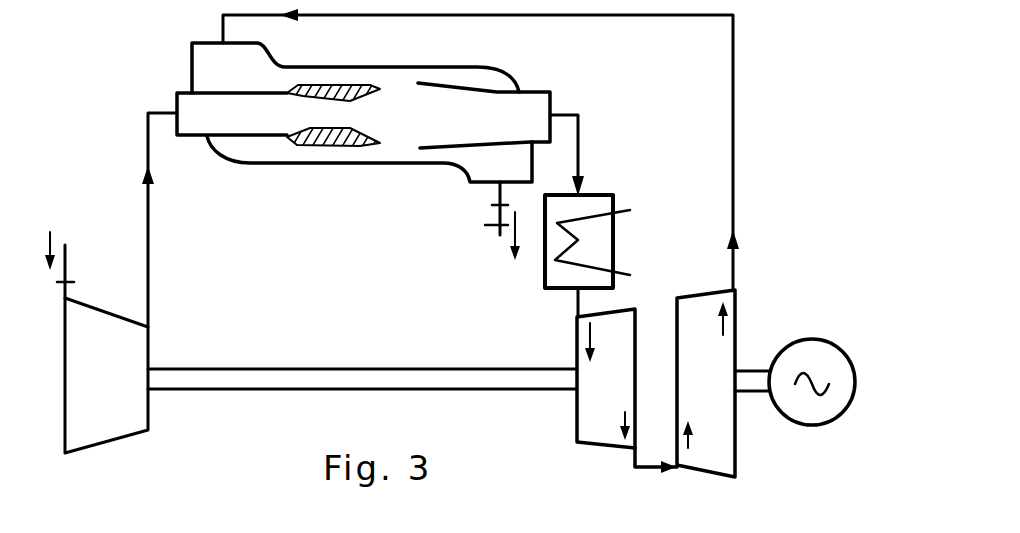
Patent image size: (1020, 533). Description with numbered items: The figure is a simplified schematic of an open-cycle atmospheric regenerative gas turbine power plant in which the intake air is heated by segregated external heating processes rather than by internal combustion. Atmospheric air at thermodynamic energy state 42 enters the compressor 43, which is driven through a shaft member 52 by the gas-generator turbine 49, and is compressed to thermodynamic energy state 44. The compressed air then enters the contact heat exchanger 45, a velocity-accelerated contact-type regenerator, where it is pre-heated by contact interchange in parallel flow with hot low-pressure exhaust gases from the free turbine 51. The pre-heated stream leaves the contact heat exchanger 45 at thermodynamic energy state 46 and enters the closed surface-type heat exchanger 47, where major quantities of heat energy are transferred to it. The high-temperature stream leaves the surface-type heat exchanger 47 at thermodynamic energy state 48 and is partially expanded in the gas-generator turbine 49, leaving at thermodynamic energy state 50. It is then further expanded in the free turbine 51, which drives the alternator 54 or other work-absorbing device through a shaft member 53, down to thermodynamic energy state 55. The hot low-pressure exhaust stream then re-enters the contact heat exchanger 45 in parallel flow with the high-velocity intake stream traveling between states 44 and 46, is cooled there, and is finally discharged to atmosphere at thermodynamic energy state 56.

The thermodynamic energy state of intake atmospheric air 42 is at (80, 260).
The compressor 43 is at (117, 397).
The thermodynamic energy state of compressed air 44 is at (147, 298).
The contact heat exchanger 45 is at (361, 163).
The thermodynamic energy state of pre-heated intake fluid 46 is at (572, 167).
The closed surface-type heat exchanger 47 is at (610, 258).
The thermodynamic energy state of high-temperature intake fluid 48 is at (583, 300).
The gas-generator turbine 49 is at (620, 397).
The thermodynamic energy state of partially expanded intake fluid 50 is at (653, 467).
The free turbine 51 is at (713, 397).
The shaft member 52 is at (312, 370).
The shaft member 53 is at (755, 370).
The alternator 54 is at (813, 342).
The thermodynamic energy state of free-turbine exhaust 55 is at (727, 178).
The thermodynamic energy state of discharged exhaust 56 is at (497, 225).